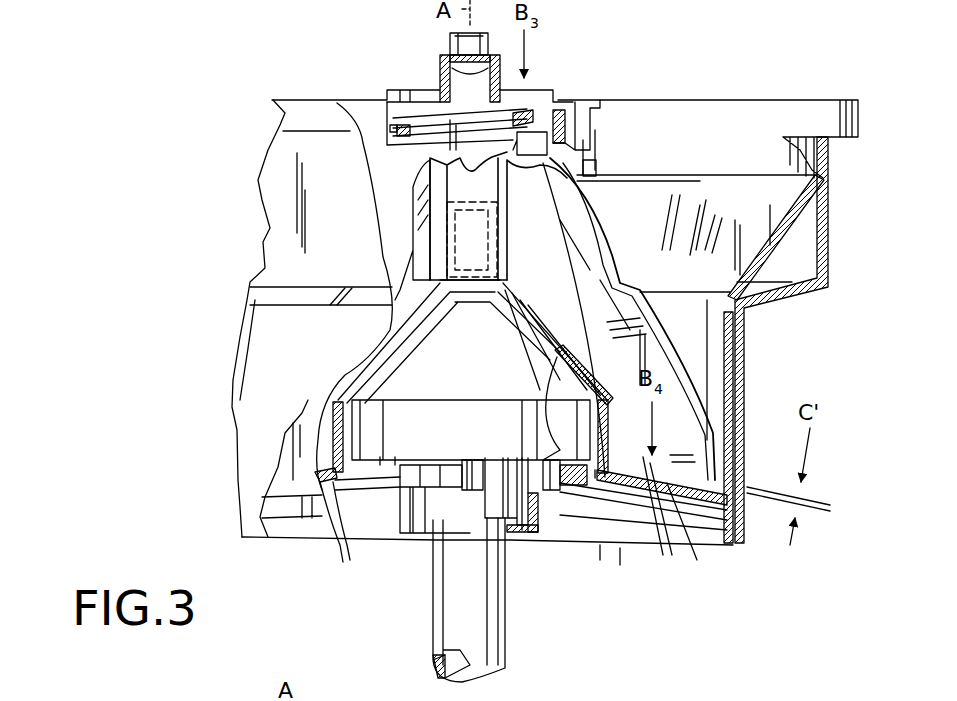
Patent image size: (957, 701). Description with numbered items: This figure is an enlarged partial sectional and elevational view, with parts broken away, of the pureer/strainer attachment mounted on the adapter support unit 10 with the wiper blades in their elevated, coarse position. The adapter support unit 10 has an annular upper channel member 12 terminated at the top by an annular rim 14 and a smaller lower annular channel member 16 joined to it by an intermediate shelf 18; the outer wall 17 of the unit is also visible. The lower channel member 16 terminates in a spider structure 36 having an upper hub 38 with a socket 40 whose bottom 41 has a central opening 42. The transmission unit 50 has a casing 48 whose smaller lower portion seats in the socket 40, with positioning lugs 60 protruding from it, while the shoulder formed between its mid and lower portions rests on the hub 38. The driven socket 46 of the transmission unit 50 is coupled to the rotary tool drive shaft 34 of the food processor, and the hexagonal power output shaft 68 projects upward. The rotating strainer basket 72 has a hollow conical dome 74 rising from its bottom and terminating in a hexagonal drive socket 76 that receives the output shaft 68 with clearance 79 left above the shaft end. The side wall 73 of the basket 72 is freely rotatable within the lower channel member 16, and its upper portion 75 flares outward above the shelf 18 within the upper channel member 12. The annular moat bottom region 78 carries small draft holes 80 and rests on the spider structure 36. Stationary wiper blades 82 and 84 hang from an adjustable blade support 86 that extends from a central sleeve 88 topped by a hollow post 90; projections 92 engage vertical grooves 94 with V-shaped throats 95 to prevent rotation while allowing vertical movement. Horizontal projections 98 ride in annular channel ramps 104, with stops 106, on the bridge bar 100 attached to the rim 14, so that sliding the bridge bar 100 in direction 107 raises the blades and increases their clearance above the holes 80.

The bowl extender actuator and adapter support unit 10 is at (829, 272).
The annular upper channel member 12 is at (282, 152).
The annular rim 14 is at (292, 110).
The lower annular channel member 16 is at (262, 334).
The outer side wall 17 is at (832, 168).
The intermediate shelf or chine 18 is at (265, 296).
The rotary tool drive shaft 34 is at (488, 668).
The spider structure 36 is at (644, 530).
The upper hub 38 is at (378, 492).
The socket 40 is at (540, 482).
The bottom of socket 41 is at (466, 484).
The central opening 42 is at (505, 570).
The socket 46 is at (515, 644).
The casing 48 is at (405, 477).
The transmission unit 50 is at (472, 446).
The lugs 60 is at (466, 546).
The power output shaft 68 is at (414, 262).
The rotating strainer basket or hopper 72 is at (766, 256).
The side wall 73 is at (282, 477).
The hollow conical dome 74 is at (335, 433).
The upper portion of side wall 75 is at (762, 252).
The hexagonal drive socket 76 is at (510, 252).
The annular moat bottom region 78 is at (684, 472).
The clearance 79 is at (432, 232).
The small diameter holes 80 is at (340, 560).
The wiper blade 82 is at (678, 376).
The wiper blade 84 is at (412, 286).
The adjustable blade support 86 is at (562, 112).
The central sleeve 88 is at (430, 168).
The hollow post 90 is at (451, 42).
The projections 92 is at (592, 146).
The vertical grooves 94 is at (590, 166).
The V-shaped throats 95 is at (592, 124).
The horizontal projections 98 is at (522, 114).
The bridge bar 100 is at (442, 76).
The annular channel ramps 104 is at (415, 150).
The stops 106 is at (405, 132).
The direction 107 is at (415, 69).